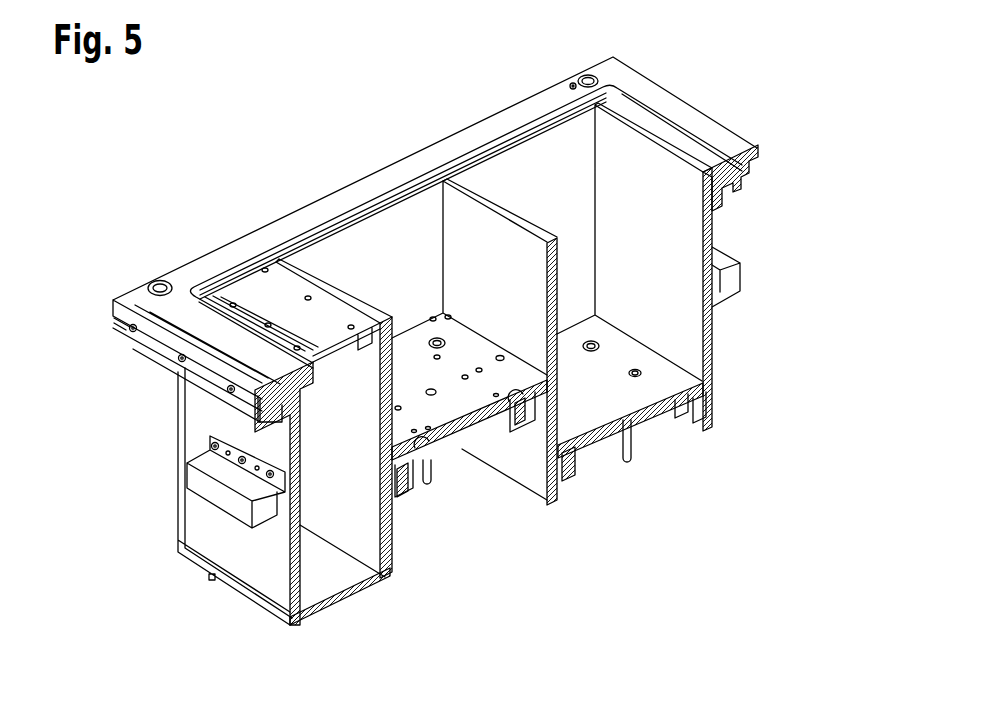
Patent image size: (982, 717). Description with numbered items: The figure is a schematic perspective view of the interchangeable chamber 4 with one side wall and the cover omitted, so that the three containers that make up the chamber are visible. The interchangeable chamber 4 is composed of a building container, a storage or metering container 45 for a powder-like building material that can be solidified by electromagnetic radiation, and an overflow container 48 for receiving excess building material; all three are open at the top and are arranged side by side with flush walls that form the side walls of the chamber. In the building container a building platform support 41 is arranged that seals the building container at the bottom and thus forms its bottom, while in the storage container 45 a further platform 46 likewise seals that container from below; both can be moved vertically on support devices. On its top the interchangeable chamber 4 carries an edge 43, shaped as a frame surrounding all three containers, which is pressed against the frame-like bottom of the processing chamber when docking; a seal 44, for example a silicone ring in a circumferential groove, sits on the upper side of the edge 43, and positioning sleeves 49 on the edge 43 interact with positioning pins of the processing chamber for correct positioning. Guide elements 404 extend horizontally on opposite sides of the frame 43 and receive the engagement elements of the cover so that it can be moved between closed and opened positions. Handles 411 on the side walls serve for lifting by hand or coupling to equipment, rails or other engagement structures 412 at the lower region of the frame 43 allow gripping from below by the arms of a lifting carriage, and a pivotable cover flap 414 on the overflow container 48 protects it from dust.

The interchangeable chamber 4 is at (379, 150).
The building platform support 41 is at (446, 405).
The edge 43 is at (287, 230).
The seal 44 is at (508, 140).
The storage container 45 is at (648, 281).
The platform 46 is at (584, 410).
The overflow container 48 is at (345, 500).
The positioning sleeves 49 is at (153, 279).
The guide elements 404 is at (198, 380).
The handles 411 is at (214, 500).
The rails or other engagement structures 412 is at (730, 185).
The pivotable cover flap 414 is at (267, 302).